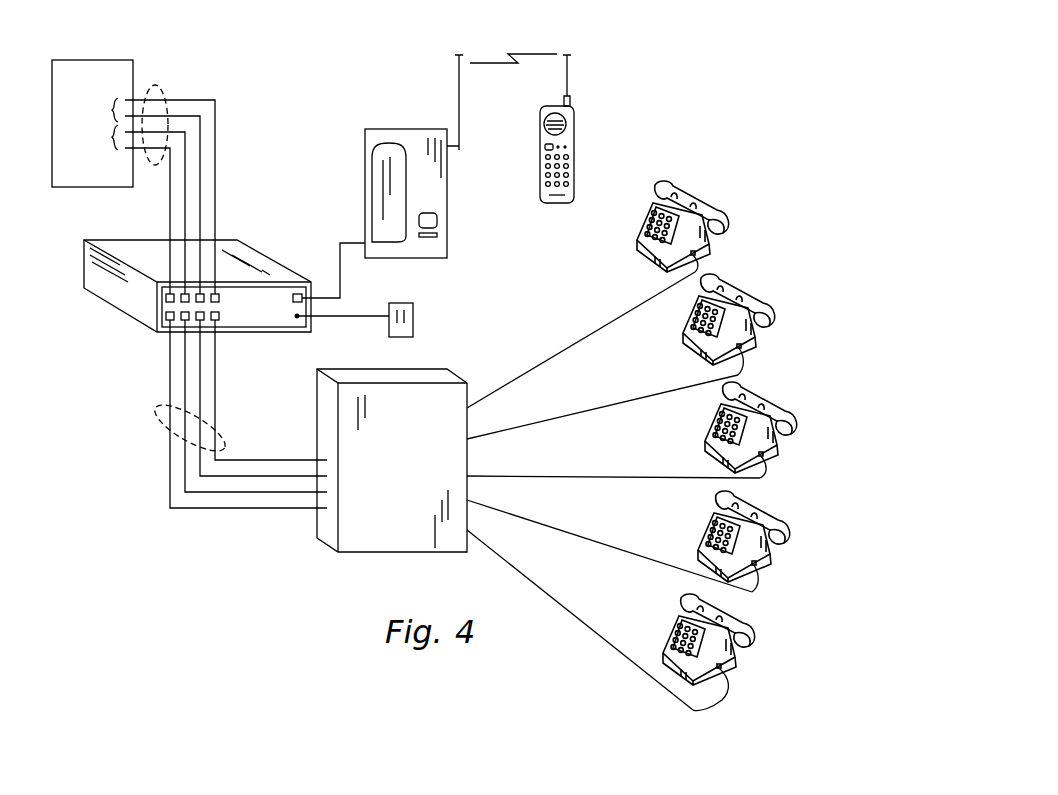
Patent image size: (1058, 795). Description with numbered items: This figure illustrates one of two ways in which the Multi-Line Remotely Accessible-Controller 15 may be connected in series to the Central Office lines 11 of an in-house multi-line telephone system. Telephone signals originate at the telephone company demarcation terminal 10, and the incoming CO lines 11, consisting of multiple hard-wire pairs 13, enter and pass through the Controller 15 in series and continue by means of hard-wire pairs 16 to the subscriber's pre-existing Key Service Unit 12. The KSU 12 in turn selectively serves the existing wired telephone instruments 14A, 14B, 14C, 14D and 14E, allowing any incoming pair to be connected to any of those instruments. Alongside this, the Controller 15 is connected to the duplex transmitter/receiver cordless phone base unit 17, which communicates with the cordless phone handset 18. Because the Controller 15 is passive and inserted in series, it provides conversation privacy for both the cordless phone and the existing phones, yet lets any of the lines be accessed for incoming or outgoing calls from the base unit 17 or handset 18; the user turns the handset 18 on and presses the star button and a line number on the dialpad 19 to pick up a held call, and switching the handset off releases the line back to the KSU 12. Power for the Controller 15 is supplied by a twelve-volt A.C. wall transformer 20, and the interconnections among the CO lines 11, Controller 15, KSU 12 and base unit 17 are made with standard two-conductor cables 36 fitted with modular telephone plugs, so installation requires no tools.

The telephone company demarcation terminal 10 is at (90, 178).
The Central Office lines 11 is at (112, 123).
The Key Service Unit 12 is at (433, 397).
The hard-wire pairs 13 is at (155, 85).
The telephone instrument 14A is at (712, 210).
The telephone instrument 14B is at (760, 300).
The telephone instrument 14C is at (778, 397).
The telephone instrument 14D is at (772, 515).
The telephone instrument 14E is at (740, 623).
The Multi-Line Remotely Accessible-Controller 15 is at (130, 303).
The hard-wire pairs 16 is at (157, 408).
The cordless phone base unit 17 is at (386, 135).
The cordless phone handset 18 is at (560, 135).
The dialpad 19 is at (557, 176).
The wall transformer 20 is at (412, 307).
The two-conductor cables 36 is at (340, 268).